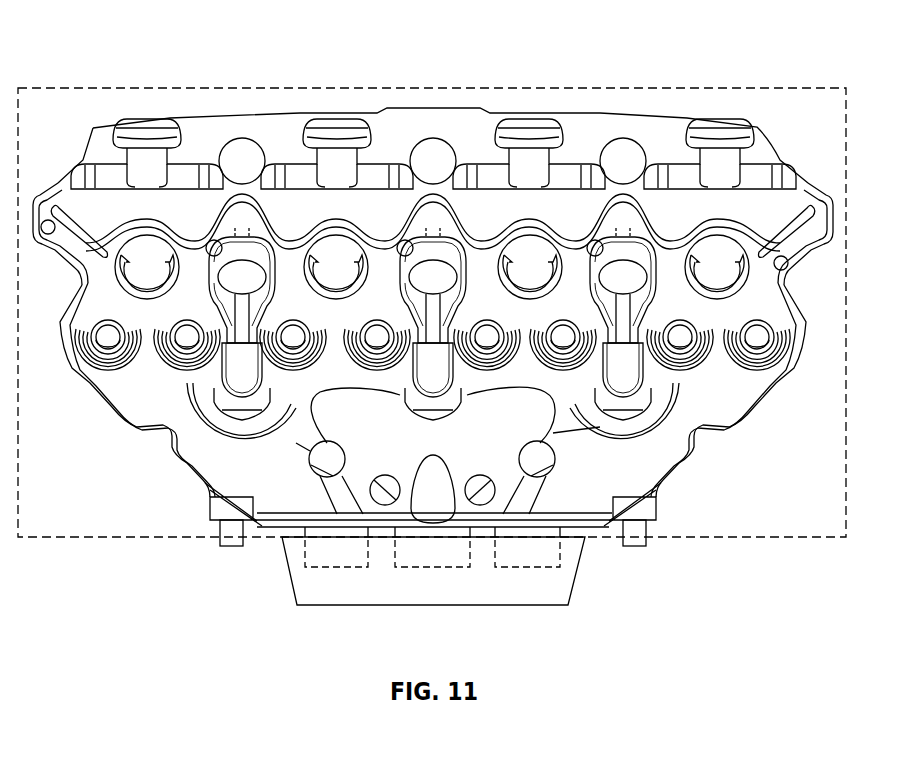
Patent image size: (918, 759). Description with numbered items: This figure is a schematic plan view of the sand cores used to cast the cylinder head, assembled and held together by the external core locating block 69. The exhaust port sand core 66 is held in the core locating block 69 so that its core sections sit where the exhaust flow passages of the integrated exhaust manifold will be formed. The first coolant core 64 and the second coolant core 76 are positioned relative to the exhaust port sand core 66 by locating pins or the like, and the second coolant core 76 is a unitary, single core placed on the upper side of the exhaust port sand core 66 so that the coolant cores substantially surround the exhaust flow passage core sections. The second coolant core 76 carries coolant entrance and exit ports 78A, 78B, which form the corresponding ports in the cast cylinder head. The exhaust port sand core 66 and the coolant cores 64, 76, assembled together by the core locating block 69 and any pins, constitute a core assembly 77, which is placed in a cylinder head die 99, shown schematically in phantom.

The cylinder head die 99 is at (97, 87).
The first coolant core 64 is at (758, 142).
The core assembly 77 is at (112, 434).
The exhaust port sand core 66 is at (735, 420).
The second coolant core 76 is at (683, 457).
The coolant entrance port 78A is at (218, 537).
The coolant exit port 78B is at (648, 537).
The core locating block 69 is at (513, 606).